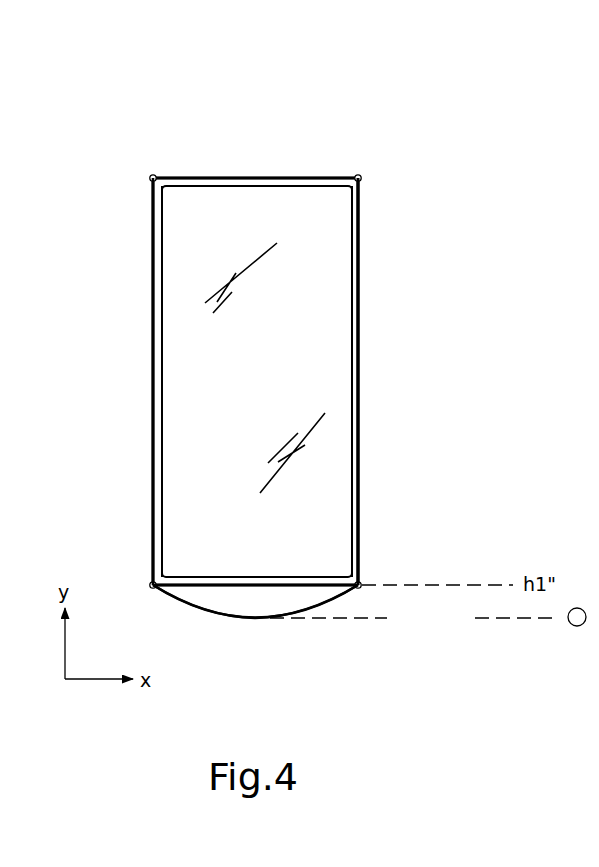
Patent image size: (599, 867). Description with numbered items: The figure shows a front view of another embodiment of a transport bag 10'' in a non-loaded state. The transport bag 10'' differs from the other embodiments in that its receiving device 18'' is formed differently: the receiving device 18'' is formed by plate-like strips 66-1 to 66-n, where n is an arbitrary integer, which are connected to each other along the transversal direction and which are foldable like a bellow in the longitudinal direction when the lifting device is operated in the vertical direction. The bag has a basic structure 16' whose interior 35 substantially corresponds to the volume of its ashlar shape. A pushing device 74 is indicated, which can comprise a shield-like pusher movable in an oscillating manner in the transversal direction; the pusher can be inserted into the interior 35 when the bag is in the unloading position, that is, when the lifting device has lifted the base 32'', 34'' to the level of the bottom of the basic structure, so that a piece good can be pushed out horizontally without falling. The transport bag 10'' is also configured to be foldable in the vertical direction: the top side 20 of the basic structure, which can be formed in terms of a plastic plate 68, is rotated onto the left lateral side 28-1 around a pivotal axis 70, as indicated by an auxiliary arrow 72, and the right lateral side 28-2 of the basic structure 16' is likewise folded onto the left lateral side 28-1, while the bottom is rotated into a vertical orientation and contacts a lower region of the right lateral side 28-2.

The transport bag 10'' is at (80, 108).
The top side 20 is at (222, 176).
The plastic plate 68 is at (255, 177).
The pivotal axis 70 is at (150, 178).
The auxiliary arrow 72 is at (184, 187).
The pushing device 74 is at (362, 250).
The left lateral side 28-1 is at (150, 310).
The right lateral side 28-2 is at (363, 294).
The basic structure 16' is at (328, 381).
The interior 35 is at (242, 386).
The plate-like strip 66-1 is at (152, 588).
The plate-like strip 66-n is at (428, 617).
The receiving device 18'' is at (277, 650).
The base 32'' is at (219, 663).
The bottom edge 34'' is at (306, 601).